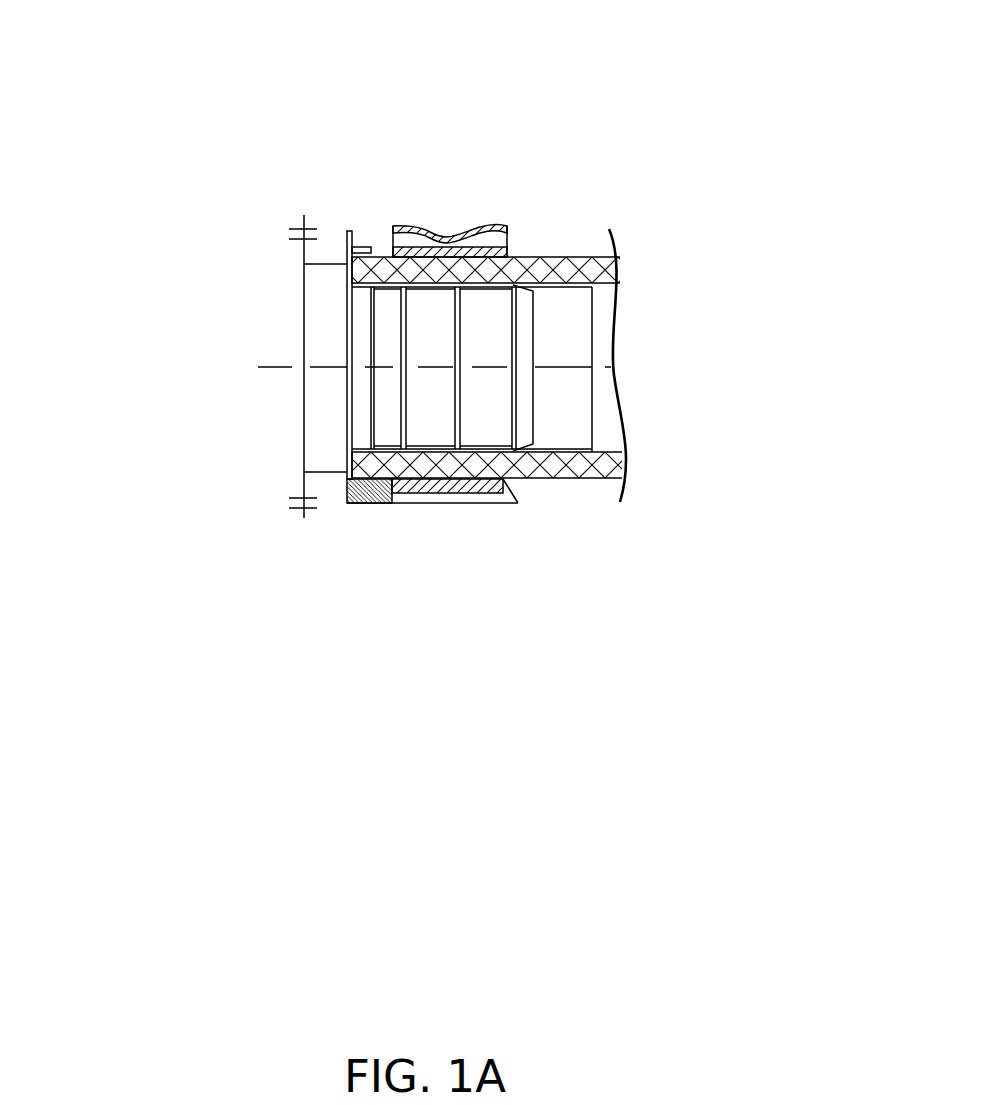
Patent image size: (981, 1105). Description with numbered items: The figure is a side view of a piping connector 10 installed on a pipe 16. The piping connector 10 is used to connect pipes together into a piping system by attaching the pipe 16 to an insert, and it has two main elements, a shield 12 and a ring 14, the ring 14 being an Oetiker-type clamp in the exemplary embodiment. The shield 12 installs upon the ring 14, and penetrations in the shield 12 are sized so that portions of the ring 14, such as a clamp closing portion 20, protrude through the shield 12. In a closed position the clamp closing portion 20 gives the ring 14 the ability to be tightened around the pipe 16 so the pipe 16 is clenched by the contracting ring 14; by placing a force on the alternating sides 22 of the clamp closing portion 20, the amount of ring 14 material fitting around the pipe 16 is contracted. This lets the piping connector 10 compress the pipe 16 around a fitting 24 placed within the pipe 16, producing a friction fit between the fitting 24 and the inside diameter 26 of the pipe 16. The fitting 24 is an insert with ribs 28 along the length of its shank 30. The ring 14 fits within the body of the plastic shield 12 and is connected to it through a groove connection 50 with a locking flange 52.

The piping connector 10 is at (565, 267).
The shield 12 is at (347, 505).
The ring 14 is at (427, 226).
The pipe 16 is at (603, 479).
The clamp closing portion 20 is at (497, 226).
The alternating sides 22 is at (397, 226).
The fitting 24 is at (483, 321).
The inside diameter 26 is at (593, 391).
The ribs 28 is at (455, 383).
The shank 30 is at (472, 401).
The groove connection 50 is at (433, 495).
The locking flange 52 is at (513, 505).